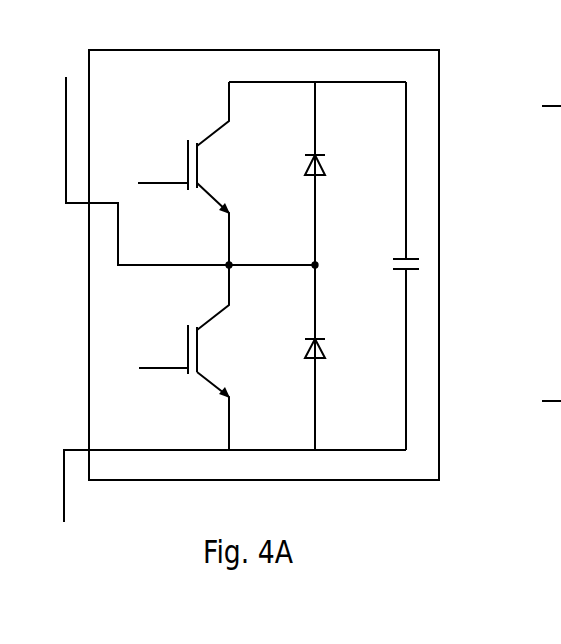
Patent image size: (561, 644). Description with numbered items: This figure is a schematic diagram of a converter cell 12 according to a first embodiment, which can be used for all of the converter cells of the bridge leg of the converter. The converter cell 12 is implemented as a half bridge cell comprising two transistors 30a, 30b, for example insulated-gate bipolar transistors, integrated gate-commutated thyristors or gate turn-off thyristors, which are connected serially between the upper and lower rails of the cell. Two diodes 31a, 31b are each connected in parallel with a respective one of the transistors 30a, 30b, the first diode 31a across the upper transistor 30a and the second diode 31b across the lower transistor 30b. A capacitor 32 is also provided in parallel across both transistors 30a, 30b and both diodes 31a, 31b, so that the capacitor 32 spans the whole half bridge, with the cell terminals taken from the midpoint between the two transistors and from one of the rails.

The converter cell 12 is at (279, 77).
The transistor 30a is at (157, 183).
The transistor 30b is at (178, 370).
The diode 31a is at (348, 164).
The diode 31b is at (348, 349).
The capacitor 32 is at (413, 270).